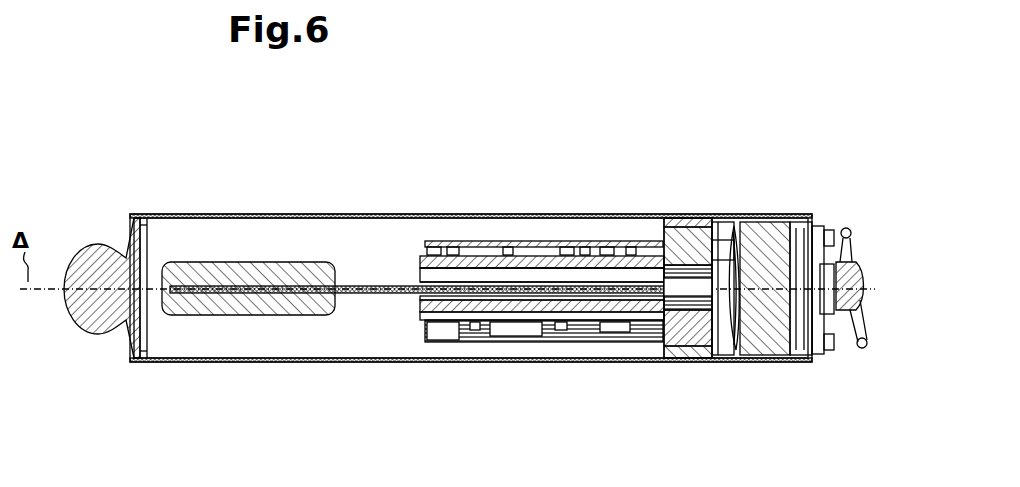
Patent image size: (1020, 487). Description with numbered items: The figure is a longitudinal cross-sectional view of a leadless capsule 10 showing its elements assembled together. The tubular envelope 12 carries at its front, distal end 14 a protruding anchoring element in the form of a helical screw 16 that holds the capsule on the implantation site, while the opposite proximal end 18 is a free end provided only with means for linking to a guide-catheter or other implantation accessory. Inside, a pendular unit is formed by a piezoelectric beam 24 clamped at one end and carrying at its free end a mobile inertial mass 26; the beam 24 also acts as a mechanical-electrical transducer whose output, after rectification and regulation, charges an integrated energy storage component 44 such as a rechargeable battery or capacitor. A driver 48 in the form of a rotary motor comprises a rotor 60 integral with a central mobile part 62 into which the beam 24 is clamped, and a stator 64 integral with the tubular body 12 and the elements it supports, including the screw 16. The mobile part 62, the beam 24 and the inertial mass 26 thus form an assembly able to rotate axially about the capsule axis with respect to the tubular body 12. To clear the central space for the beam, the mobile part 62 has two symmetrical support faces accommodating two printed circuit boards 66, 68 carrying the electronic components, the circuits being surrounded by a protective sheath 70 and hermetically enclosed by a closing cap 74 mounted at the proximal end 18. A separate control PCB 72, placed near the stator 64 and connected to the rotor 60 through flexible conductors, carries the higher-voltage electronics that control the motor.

The capsule 10 is at (686, 150).
The tubular envelope 12 is at (420, 215).
The front (distal) end 14 is at (824, 195).
The helical screw 16 is at (852, 250).
The proximal end 18 is at (155, 196).
The piezoelectric beam 24 is at (384, 280).
The inertial mass 26 is at (258, 270).
The energy storage component 44 is at (770, 240).
The driver 48 is at (672, 366).
The rotor 60 is at (672, 228).
The mobile part 62 is at (626, 320).
The stator 64 is at (714, 225).
The printed circuit board 66 is at (556, 268).
The printed circuit board 68 is at (561, 320).
The sheath 70 is at (496, 245).
The control PCB 72 is at (738, 310).
The closing cap 74 is at (128, 344).